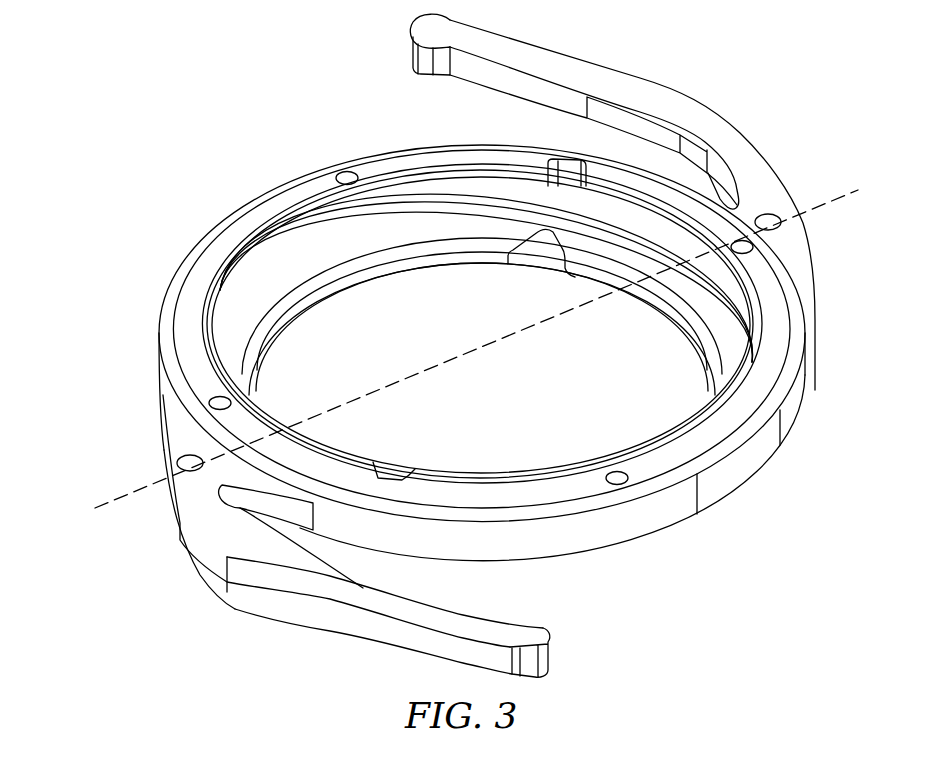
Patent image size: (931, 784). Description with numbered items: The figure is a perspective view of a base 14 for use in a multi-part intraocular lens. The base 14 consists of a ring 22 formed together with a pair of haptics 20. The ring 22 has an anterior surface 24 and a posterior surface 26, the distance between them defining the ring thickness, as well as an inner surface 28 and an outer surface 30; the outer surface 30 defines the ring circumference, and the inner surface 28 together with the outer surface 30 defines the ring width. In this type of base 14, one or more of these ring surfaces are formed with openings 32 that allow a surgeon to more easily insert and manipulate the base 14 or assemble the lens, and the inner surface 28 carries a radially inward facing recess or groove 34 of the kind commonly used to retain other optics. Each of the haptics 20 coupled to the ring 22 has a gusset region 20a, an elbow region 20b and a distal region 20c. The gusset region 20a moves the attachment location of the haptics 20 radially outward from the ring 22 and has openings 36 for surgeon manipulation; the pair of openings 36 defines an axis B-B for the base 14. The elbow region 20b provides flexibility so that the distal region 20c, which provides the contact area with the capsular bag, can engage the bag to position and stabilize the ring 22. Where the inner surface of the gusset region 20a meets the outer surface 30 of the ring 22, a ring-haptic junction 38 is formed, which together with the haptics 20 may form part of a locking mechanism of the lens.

The base 14 is at (204, 131).
The haptics 20 is at (429, 350).
The gusset region 20a is at (128, 352).
The elbow region 20b is at (135, 532).
The distal region 20c is at (266, 639).
The ring 22 is at (763, 475).
The anterior surface 24 is at (745, 400).
The posterior surface 26 is at (604, 560).
The inner surface 28 is at (455, 279).
The outer surface 30 is at (685, 522).
The openings 32 is at (220, 390).
The groove 34 is at (308, 230).
The openings 36 is at (186, 456).
The ring-haptic junction 38 is at (284, 540).